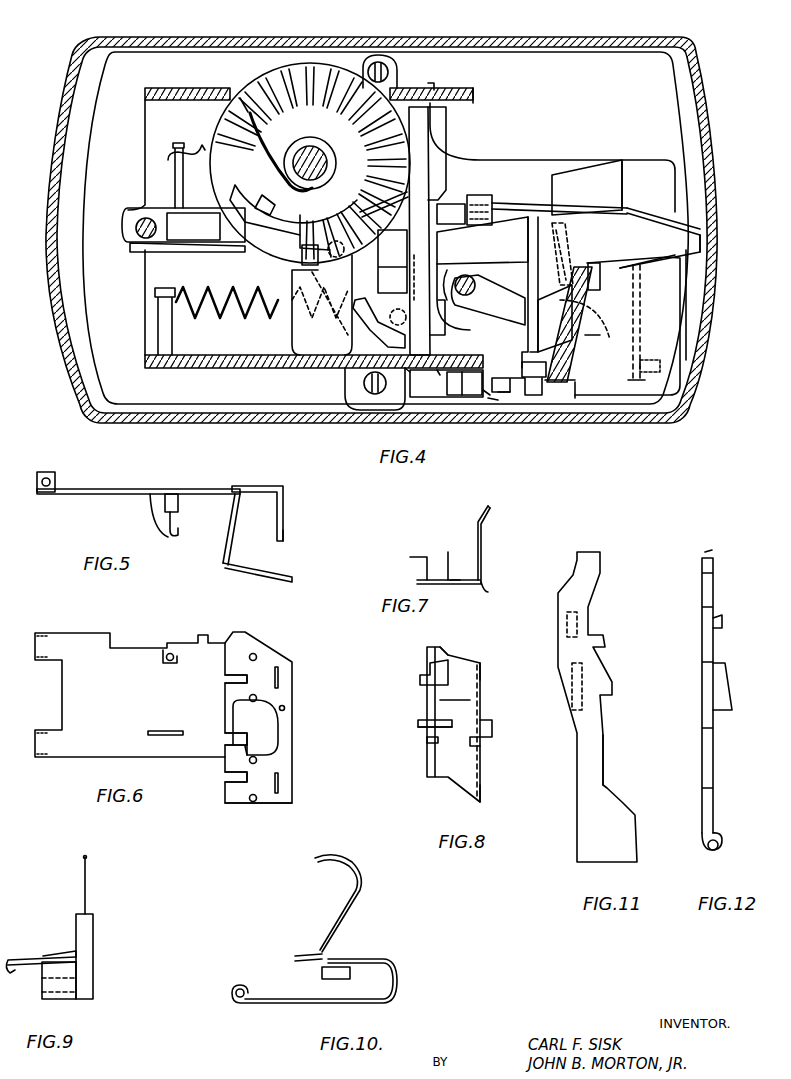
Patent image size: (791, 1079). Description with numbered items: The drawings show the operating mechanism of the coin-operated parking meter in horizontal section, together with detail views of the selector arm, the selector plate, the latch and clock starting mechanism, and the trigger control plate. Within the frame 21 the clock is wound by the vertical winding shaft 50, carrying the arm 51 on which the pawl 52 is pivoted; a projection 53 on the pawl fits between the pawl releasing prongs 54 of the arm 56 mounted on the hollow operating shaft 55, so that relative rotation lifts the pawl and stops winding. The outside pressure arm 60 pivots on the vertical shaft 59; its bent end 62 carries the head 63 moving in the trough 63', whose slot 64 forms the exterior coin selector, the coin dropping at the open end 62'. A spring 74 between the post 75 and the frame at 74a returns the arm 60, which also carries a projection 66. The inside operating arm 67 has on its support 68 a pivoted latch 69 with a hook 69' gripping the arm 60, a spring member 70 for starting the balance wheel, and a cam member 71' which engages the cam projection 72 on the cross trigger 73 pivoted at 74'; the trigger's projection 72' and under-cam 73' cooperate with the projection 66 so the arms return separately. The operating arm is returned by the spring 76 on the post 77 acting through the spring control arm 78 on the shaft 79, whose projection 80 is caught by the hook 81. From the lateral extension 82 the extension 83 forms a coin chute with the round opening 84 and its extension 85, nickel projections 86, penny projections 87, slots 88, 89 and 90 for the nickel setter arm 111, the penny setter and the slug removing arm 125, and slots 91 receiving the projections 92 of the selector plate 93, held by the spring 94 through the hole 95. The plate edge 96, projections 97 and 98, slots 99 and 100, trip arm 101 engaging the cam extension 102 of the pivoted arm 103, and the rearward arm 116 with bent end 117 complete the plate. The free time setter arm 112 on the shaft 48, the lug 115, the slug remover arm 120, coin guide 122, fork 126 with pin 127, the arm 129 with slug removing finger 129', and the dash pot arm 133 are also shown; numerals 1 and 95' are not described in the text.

In FIG. 4, the thermostat housing 1 is at (405, 40).
In FIG. 4, the frame 21 is at (292, 370).
In FIG. 4, the shaft 48 is at (490, 205).
In FIG. 4, the winding shaft 50 is at (332, 170).
In FIG. 4, the arm 51 is at (255, 248).
In FIG. 4, the pawl 52 is at (345, 247).
In FIG. 4, the projection 53 is at (255, 205).
In FIG. 4, the pawl releasing prongs 54 is at (250, 113).
In FIG. 4, the hollow operating shaft 55 is at (316, 151).
In FIG. 4, the arm 56 is at (271, 155).
In FIG. 4, the vertical shaft 59 is at (128, 243).
In FIG. 4, the pressure arm 60 is at (467, 273).
In FIG. 4, the bent outer end 62 is at (708, 305).
In FIG. 4, the open end of trough 62' is at (686, 273).
In FIG. 4, the head or thumb piece 63 is at (608, 364).
In FIG. 4, the trough 63' is at (579, 422).
In FIG. 4, the slot 64 is at (660, 318).
In FIG. 4, the projection 66 is at (448, 205).
In FIG. 4, the operating arm 67 is at (197, 252).
In FIG. 5, the operating arm 67 is at (120, 489).
In FIG. 6, the operating arm 67 is at (85, 633).
In FIG. 4, the support 68 is at (395, 286).
In FIG. 5, the support 68 is at (178, 502).
In FIG. 6, the support 68 is at (165, 652).
In FIG. 4, the latch 69 is at (473, 291).
In FIG. 9, the latch 69 is at (86, 980).
In FIG. 10, the latch 69 is at (314, 997).
In FIG. 4, the hook 69' is at (492, 180).
In FIG. 9, the hook 69' is at (41, 949).
In FIG. 10, the hook 69' is at (314, 977).
In FIG. 9, the spring member 70 is at (87, 883).
In FIG. 10, the spring member 70 is at (362, 888).
In FIG. 4, the cam member 71' is at (482, 240).
In FIG. 9, the cam member 71' is at (59, 928).
In FIG. 10, the cam member 71' is at (289, 950).
In FIG. 4, the cam projection 72 is at (448, 153).
In FIG. 11, the cam projection 72 is at (602, 707).
In FIG. 12, the cam projection 72 is at (690, 691).
In FIG. 12, the projection 72' is at (733, 614).
In FIG. 4, the cross trigger 73 is at (419, 231).
In FIG. 11, the cross trigger 73 is at (617, 760).
In FIG. 11, the cam 73' is at (561, 662).
In FIG. 12, the cam 73' is at (740, 681).
In FIG. 4, the spring 74 is at (186, 135).
In FIG. 4, the trigger pivot 74' is at (414, 232).
In FIG. 12, the trigger pivot 74' is at (690, 856).
In FIG. 4, the frame attachment point 74a is at (433, 84).
In FIG. 4, the post 75 is at (177, 186).
In FIG. 4, the spring 76 is at (195, 288).
In FIG. 4, the post 77 is at (168, 330).
In FIG. 4, the spring control arm 78 is at (390, 332).
In FIG. 4, the shaft 79 is at (296, 278).
In FIG. 4, the projection 80 is at (413, 292).
In FIG. 4, the hook 81 is at (437, 320).
In FIG. 5, the hook 81 is at (175, 545).
In FIG. 6, the hook 81 is at (165, 736).
In FIG. 4, the lateral extension 82 is at (538, 333).
In FIG. 5, the lateral extension 82 is at (234, 528).
In FIG. 6, the lateral extension 82 is at (240, 633).
In FIG. 4, the extension 83 is at (538, 372).
In FIG. 5, the extension 83 is at (270, 570).
In FIG. 6, the extension 83 is at (265, 795).
In FIG. 6, the round opening 84 is at (260, 717).
In FIG. 6, the extension of opening 85 is at (268, 733).
In FIG. 6, the projections 86 is at (258, 695).
In FIG. 6, the projections 87 is at (253, 801).
In FIG. 6, the slot 88 is at (230, 678).
In FIG. 6, the slot 89 is at (228, 780).
In FIG. 6, the slot 90 is at (232, 738).
In FIG. 6, the slots 91 is at (280, 782).
In FIG. 7, the projections 92 is at (488, 590).
In FIG. 8, the projections 92 is at (482, 778).
In FIG. 4, the selector plate 93 is at (505, 393).
In FIG. 7, the selector plate 93 is at (455, 584).
In FIG. 8, the selector plate 93 is at (460, 705).
In FIG. 4, the spring 94 is at (588, 327).
In FIG. 4, the hole 95 is at (644, 351).
In FIG. 6, the hole 95 is at (311, 696).
In FIG. 8, the tab 95' is at (418, 668).
In FIG. 4, the plate edge 96 is at (515, 412).
In FIG. 7, the plate edge 96 is at (410, 558).
In FIG. 7, the projection 97 is at (448, 553).
In FIG. 8, the projection 97 is at (460, 660).
In FIG. 8, the projection 98 is at (450, 780).
In FIG. 8, the slot 99 is at (425, 708).
In FIG. 8, the slot 100 is at (430, 743).
In FIG. 4, the trip arm 101 is at (502, 393).
In FIG. 7, the trip arm 101 is at (412, 583).
In FIG. 8, the trip arm 101 is at (425, 728).
In FIG. 4, the cam extension 102 is at (493, 400).
In FIG. 4, the pivoted arm 103 is at (483, 395).
In FIG. 4, the nickel setter arm 111 is at (548, 288).
In FIG. 4, the free time setter arm 112 is at (489, 300).
In FIG. 4, the lug 115 is at (447, 385).
In FIG. 4, the arm 116 is at (633, 313).
In FIG. 7, the arm 116 is at (482, 545).
In FIG. 4, the bent end 117 is at (652, 257).
In FIG. 7, the bent end 117 is at (490, 508).
In FIG. 8, the bent end 117 is at (492, 728).
In FIG. 4, the slug remover arm 120 is at (680, 250).
In FIG. 4, the coin guide arm 122 is at (627, 213).
In FIG. 4, the slug removing arm 125 is at (578, 254).
In FIG. 4, the fork member 126 is at (440, 375).
In FIG. 4, the pin 127 is at (407, 372).
In FIG. 4, the arm 129 is at (587, 187).
In FIG. 5, the arm 129 is at (277, 513).
In FIG. 4, the slug removing finger 129' is at (609, 268).
In FIG. 5, the slug removing finger 129' is at (315, 536).
In FIG. 4, the arm 133 is at (592, 337).